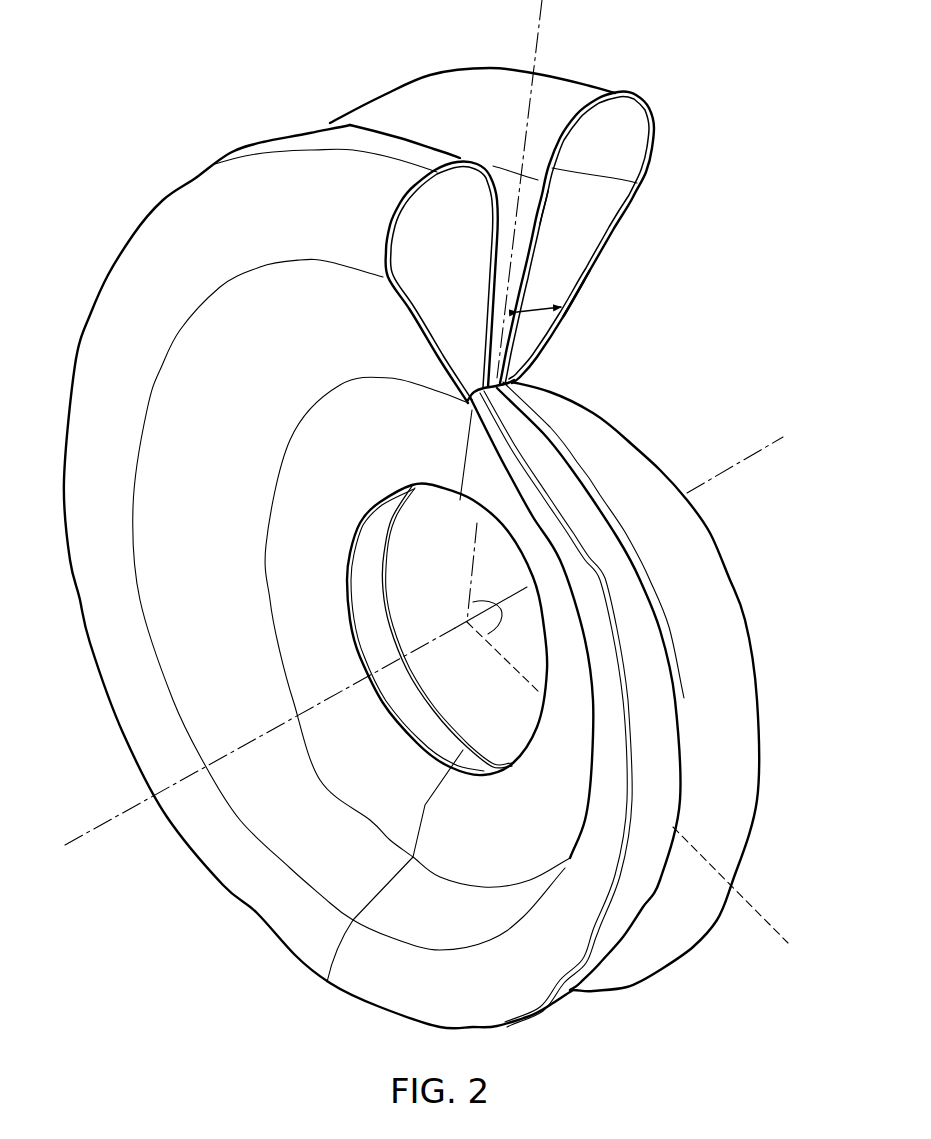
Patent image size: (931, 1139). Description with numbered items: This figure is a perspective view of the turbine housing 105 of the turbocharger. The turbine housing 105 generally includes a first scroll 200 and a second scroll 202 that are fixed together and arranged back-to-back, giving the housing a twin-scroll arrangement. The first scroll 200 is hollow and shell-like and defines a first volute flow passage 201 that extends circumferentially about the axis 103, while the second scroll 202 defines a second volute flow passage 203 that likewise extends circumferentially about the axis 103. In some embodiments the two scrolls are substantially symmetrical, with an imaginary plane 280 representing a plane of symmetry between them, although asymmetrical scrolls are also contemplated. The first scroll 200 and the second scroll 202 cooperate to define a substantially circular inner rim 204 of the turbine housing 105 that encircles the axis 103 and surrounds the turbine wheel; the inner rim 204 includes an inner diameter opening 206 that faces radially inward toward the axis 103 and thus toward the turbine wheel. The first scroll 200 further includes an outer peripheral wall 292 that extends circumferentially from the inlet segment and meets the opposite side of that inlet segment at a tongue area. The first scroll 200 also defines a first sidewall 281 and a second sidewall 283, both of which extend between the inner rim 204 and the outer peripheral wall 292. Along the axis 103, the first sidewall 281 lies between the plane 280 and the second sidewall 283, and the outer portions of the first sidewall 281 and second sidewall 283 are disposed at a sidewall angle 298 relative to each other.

The turbine housing 105 is at (423, 514).
The second scroll 202 is at (350, 566).
The first scroll 200 is at (544, 520).
The outer peripheral wall 292 is at (455, 70).
The first volute flow passage 201 is at (601, 238).
The second volute flow passage 203 is at (483, 282).
The first sidewall 281 is at (545, 212).
The second sidewall 283 is at (580, 294).
The sidewall angle 298 is at (545, 312).
The inner rim 204 is at (390, 597).
The inner diameter opening 206 is at (447, 630).
The axis 103 is at (735, 468).
The imaginary plane 280 is at (627, 772).